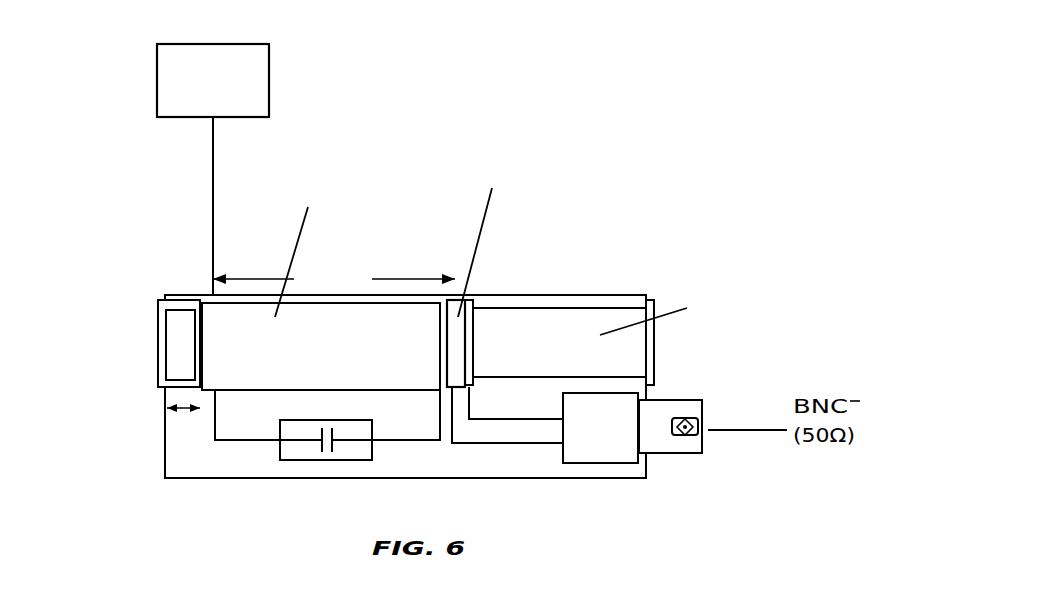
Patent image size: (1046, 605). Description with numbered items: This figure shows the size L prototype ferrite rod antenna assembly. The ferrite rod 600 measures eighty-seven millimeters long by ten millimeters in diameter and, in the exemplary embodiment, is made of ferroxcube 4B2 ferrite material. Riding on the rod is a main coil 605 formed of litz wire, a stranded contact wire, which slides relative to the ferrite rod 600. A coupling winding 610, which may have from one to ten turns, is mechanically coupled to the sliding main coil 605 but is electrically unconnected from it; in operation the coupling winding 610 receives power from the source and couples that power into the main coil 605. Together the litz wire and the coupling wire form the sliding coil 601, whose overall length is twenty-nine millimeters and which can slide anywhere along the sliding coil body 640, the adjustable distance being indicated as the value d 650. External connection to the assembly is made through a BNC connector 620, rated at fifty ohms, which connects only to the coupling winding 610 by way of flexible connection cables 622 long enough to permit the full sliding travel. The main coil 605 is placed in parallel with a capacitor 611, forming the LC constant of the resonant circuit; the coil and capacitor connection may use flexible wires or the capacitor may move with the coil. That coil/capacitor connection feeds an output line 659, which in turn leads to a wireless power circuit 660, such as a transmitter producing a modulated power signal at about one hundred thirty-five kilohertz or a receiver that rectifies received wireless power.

The ferrite rod 600 is at (587, 315).
The sliding coil 601 is at (242, 276).
The main coil 605 is at (383, 317).
The coupling winding 610 is at (475, 298).
The capacitor 611 is at (280, 457).
The BNC connector 620 is at (598, 463).
The flexible connection cables 622 is at (513, 443).
The sliding coil body 640 is at (192, 307).
The value d 650 is at (185, 413).
The output line 659 is at (214, 141).
The wireless power circuit 660 is at (220, 44).